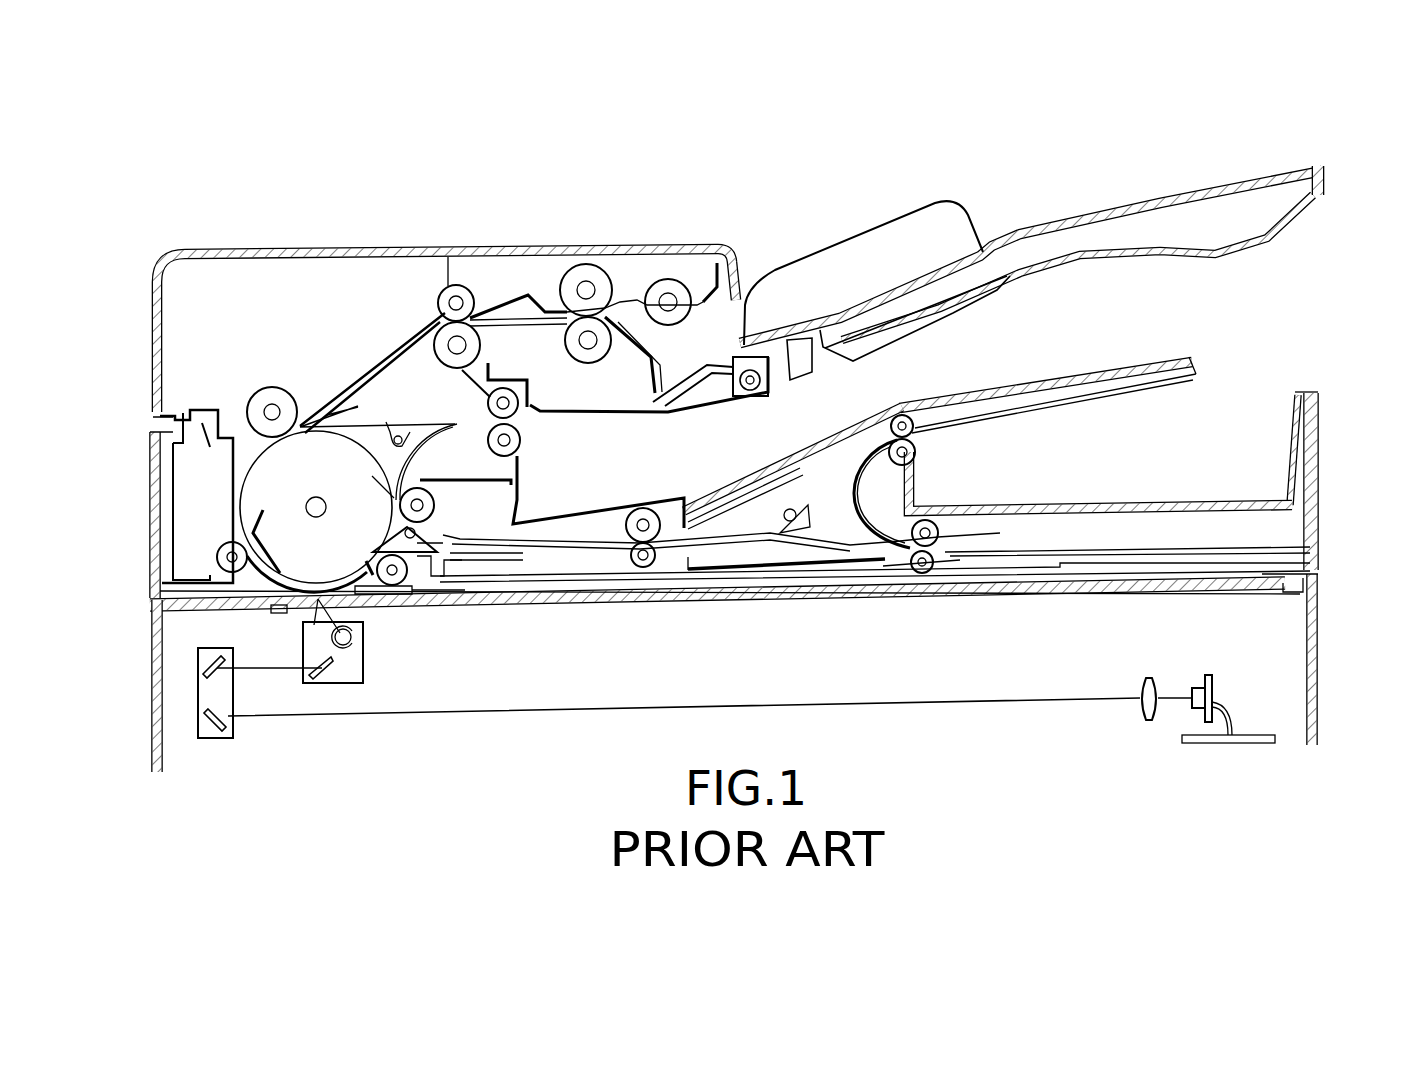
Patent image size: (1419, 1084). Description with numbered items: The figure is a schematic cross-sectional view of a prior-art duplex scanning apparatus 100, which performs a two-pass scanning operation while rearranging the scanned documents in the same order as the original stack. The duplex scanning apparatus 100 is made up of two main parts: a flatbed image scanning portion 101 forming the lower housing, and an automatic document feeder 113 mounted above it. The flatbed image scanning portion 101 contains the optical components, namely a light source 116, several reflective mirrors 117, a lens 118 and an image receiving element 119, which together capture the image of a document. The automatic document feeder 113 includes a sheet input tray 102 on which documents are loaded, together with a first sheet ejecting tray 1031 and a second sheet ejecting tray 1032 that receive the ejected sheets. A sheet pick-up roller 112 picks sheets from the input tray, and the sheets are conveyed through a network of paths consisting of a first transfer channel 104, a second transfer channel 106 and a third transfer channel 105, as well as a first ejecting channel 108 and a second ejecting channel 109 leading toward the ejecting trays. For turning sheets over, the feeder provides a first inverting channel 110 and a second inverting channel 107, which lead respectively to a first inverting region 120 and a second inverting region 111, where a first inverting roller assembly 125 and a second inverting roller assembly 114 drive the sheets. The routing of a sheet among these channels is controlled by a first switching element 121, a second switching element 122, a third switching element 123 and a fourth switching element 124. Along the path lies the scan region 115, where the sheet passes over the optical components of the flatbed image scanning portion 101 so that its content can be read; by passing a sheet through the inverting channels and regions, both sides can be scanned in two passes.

The duplex scanning apparatus 100 is at (293, 164).
The flatbed image scanning portion 101 is at (1331, 631).
The sheet input tray 102 is at (1128, 205).
The first sheet ejecting tray 1031 is at (1128, 503).
The second sheet ejecting tray 1032 is at (1057, 382).
The first transfer channel 104 is at (407, 347).
The third transfer channel 105 is at (560, 545).
The second transfer channel 106 is at (237, 470).
The second inverting channel 107 is at (873, 525).
The first ejecting channel 108 is at (410, 452).
The second ejecting channel 109 is at (770, 520).
The first inverting channel 110 is at (353, 390).
The second inverting region 111 is at (975, 559).
The sheet pick-up roller 112 is at (670, 292).
The automatic document feeder 113 is at (1339, 171).
The second inverting roller assembly 114 is at (933, 560).
The scan region 115 is at (298, 613).
The light source 116 is at (357, 640).
The reflective mirrors 117 is at (207, 668).
The lens 118 is at (1142, 700).
The image receiving element 119 is at (1198, 685).
The first inverting region 120 is at (532, 419).
The first switching element 121 is at (460, 577).
The second switching element 122 is at (390, 427).
The third switching element 123 is at (770, 508).
The fourth switching element 124 is at (818, 540).
The first inverting roller assembly 125 is at (530, 387).